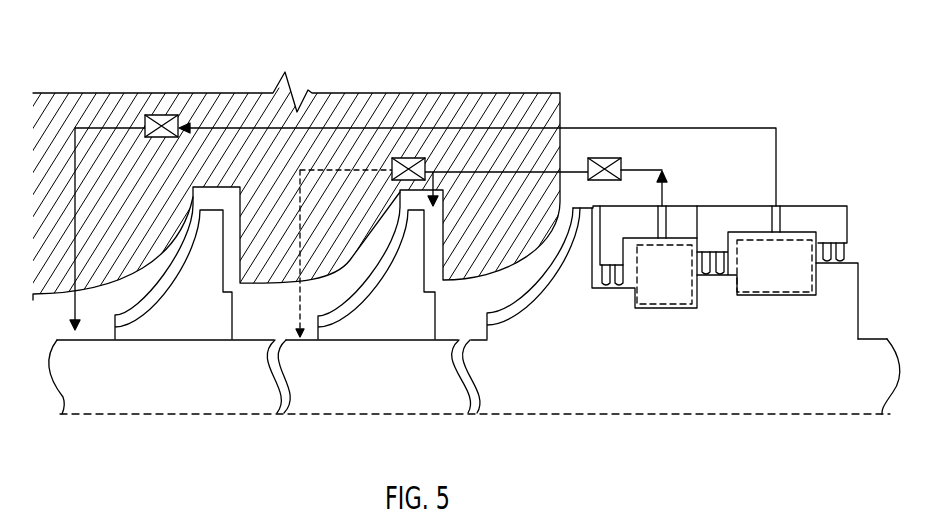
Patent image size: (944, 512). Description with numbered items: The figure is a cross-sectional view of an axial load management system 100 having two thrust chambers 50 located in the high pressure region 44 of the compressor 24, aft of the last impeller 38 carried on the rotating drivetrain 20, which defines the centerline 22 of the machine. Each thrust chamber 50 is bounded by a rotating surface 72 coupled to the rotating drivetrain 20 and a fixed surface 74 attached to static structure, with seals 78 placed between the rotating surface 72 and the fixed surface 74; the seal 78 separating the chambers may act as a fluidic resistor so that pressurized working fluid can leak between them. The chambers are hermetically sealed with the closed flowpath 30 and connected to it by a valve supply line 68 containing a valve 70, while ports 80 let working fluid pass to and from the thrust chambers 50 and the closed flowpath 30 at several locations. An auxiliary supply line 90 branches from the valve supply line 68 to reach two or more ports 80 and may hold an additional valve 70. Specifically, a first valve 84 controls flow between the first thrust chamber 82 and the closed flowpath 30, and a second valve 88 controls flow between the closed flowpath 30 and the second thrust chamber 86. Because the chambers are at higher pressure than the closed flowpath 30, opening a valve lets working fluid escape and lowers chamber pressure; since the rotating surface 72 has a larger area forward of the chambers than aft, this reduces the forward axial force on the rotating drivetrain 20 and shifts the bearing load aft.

The axial load management system 100 is at (66, 44).
The rotating drivetrain 20 is at (548, 388).
The centerline 22 is at (195, 417).
The compressor 24 is at (216, 56).
The closed flowpath 30 is at (175, 298).
The impeller 38 is at (183, 328).
The high pressure region 44 is at (414, 72).
The thrust chamber 50 is at (724, 321).
The valve supply line 68 is at (473, 170).
The valve 70 is at (387, 131).
The rotating surface 72 is at (635, 300).
The fixed surface 74 is at (702, 243).
The seal 78 is at (613, 292).
The port 80 is at (72, 296).
The first thrust chamber 82 is at (667, 330).
The first valve 84 is at (601, 158).
The second thrust chamber 86 is at (781, 312).
The second valve 88 is at (157, 115).
The auxiliary supply line 90 is at (333, 170).